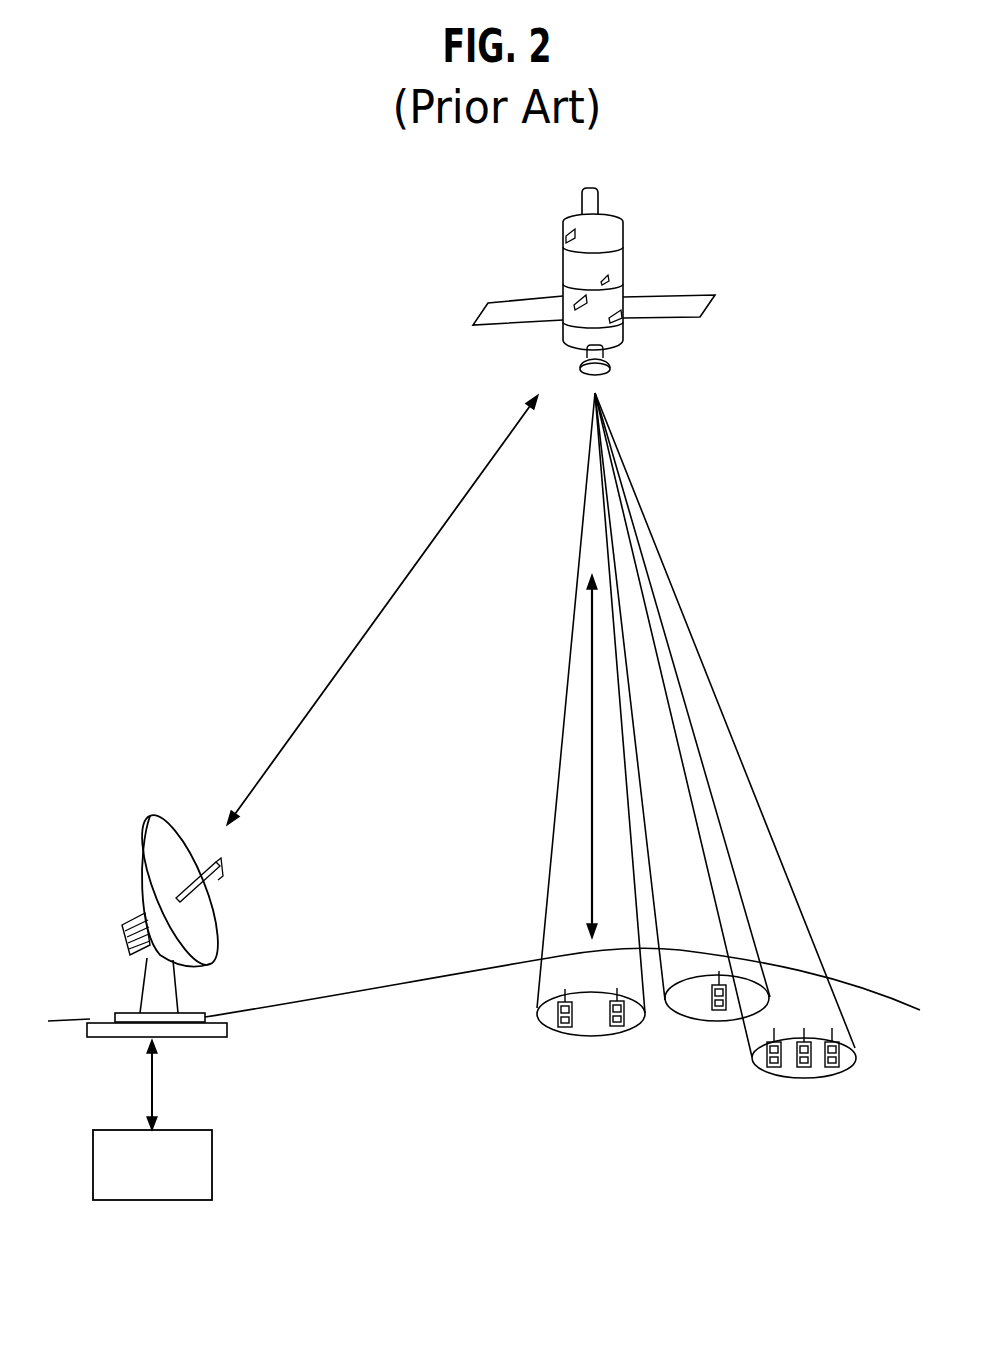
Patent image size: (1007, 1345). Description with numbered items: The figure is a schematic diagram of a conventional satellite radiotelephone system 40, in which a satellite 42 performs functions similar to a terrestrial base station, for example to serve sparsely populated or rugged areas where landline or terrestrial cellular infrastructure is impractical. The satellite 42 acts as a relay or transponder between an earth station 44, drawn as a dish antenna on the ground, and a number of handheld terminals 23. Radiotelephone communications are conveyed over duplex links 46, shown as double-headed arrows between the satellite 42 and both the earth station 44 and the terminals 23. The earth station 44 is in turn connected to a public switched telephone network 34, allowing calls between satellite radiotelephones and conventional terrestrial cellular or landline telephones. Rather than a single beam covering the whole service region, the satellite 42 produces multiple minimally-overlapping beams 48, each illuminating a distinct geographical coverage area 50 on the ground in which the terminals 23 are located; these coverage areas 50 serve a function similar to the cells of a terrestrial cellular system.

The satellite radiotelephone system 40 is at (303, 375).
The satellite 42 is at (654, 272).
The earth station 44 is at (120, 1035).
The duplex links 46 is at (405, 577).
The beams 48 is at (545, 900).
The coverage areas 50 is at (543, 1025).
The terminals 23 is at (570, 1028).
The public switched telephone network 34 is at (212, 1140).